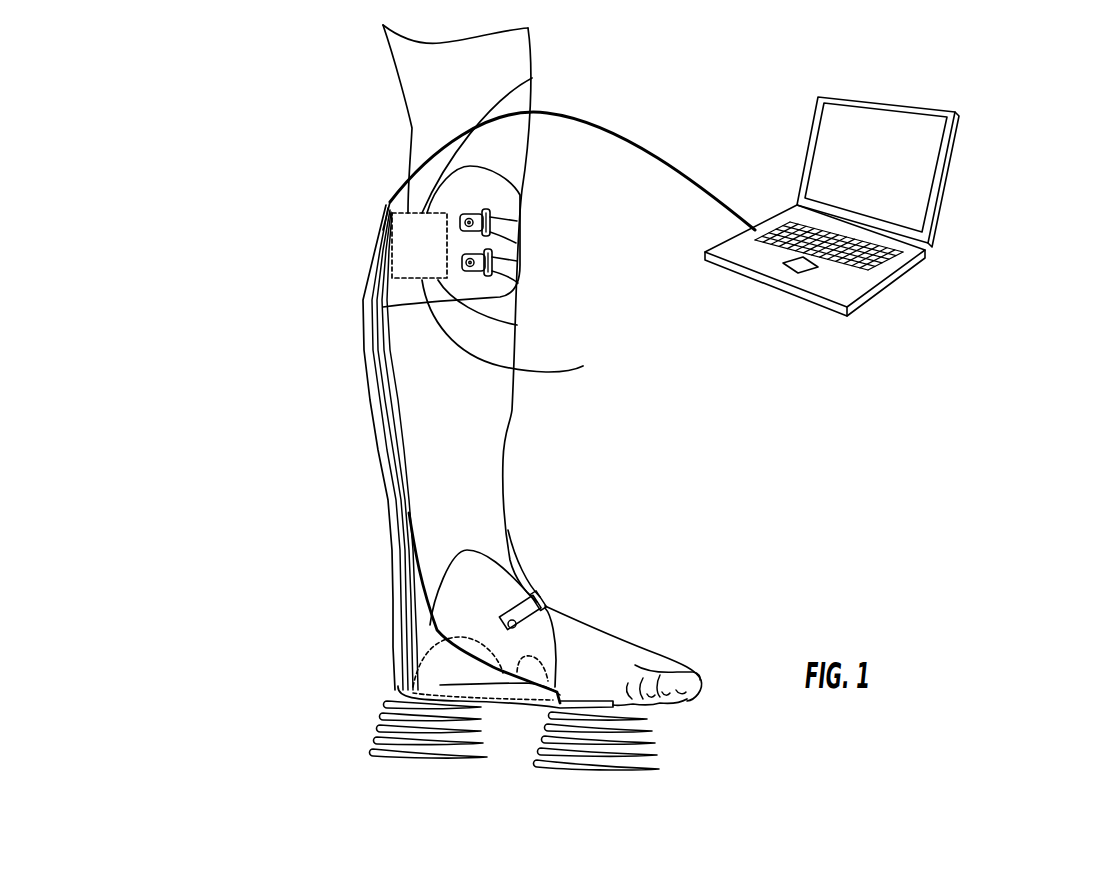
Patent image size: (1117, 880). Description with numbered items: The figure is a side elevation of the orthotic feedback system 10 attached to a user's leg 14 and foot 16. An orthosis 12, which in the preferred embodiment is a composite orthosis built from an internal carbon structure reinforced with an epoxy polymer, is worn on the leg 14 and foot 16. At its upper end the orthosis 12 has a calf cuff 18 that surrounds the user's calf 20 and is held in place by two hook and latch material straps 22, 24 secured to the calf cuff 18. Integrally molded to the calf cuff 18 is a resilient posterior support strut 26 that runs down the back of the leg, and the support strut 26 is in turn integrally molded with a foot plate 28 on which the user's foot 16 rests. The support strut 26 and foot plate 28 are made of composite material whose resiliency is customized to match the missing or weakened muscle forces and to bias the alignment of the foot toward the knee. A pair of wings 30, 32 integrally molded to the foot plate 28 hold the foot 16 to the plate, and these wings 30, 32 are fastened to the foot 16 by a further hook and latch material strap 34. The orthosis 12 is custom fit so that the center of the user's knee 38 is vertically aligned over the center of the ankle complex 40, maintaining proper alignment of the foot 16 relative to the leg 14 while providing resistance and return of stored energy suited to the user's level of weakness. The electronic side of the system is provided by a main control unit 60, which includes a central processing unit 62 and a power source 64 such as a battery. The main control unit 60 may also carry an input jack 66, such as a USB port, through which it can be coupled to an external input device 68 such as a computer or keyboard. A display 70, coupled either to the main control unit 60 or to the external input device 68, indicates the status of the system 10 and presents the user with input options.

The orthotic feedback system 10 is at (222, 212).
The orthosis 12 is at (358, 258).
The leg 14 is at (508, 437).
The foot 16 is at (660, 648).
The calf cuff 18 is at (392, 203).
The calf 20 is at (397, 370).
The hook and latch material strap 22 is at (517, 228).
The hook and latch material strap 24 is at (520, 268).
The posterior support strut 26 is at (417, 583).
The foot plate 28 is at (523, 713).
The wing 30 is at (557, 643).
The wing 32 is at (527, 585).
The hook and latch material strap 34 is at (555, 612).
The knee 38 is at (530, 166).
The ankle complex 40 is at (483, 607).
The main control unit 60 is at (532, 78).
The central processing unit 62 is at (517, 325).
The power source 64 is at (583, 366).
The input jack 66 is at (410, 188).
The external input device 68 is at (1000, 180).
The display 70 is at (917, 130).